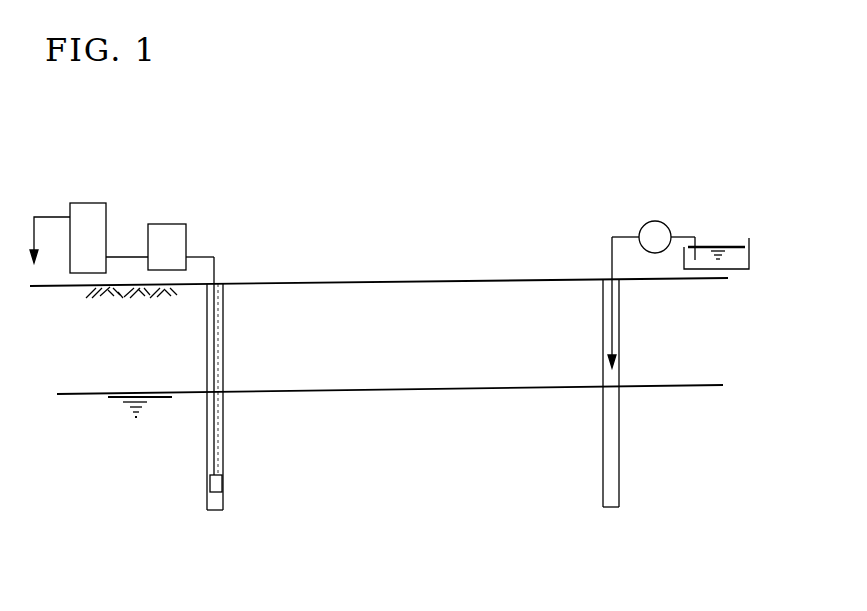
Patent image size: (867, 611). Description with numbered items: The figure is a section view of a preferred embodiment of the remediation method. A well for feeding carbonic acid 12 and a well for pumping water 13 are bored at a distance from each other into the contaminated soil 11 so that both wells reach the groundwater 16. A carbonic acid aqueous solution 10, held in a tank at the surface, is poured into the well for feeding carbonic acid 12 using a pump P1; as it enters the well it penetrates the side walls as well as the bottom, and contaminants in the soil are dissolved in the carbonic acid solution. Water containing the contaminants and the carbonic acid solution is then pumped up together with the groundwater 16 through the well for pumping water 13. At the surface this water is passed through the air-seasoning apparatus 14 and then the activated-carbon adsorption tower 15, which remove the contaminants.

The carbonic acid aqueous solution 10 is at (740, 245).
The contaminated soil 11 is at (408, 303).
The well for feeding carbonic acid 12 is at (614, 380).
The well for pumping water 13 is at (218, 340).
The air-seasoning apparatus 14 is at (170, 233).
The activated-carbon adsorption tower 15 is at (86, 215).
The groundwater 16 is at (518, 405).
The pump P1 is at (651, 221).